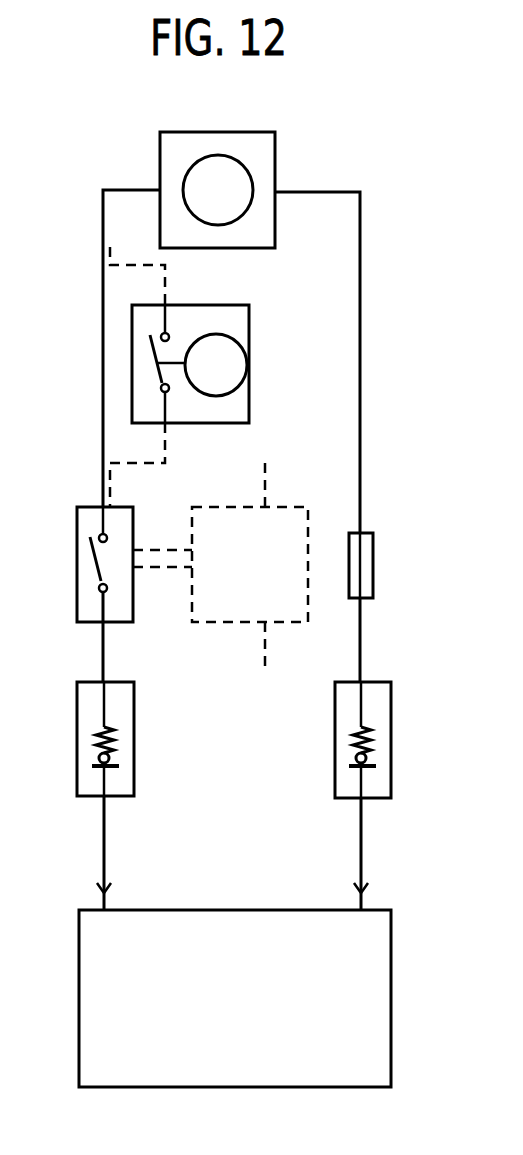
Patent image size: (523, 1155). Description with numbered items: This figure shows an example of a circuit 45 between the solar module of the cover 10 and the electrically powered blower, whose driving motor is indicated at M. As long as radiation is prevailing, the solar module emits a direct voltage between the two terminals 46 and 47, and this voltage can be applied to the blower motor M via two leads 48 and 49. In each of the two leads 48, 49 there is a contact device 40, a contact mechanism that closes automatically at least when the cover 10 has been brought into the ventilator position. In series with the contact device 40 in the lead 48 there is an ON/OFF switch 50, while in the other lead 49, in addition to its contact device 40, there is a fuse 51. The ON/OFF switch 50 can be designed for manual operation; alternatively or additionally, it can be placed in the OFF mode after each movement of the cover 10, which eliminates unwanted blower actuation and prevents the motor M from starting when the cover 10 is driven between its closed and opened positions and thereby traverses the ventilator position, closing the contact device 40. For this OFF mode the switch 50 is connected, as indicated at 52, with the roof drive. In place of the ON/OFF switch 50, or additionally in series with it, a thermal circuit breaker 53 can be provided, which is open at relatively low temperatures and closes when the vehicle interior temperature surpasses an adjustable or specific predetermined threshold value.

The cover 10 is at (252, 1013).
The contact device 40 is at (337, 757).
The circuit 45 is at (392, 340).
The terminal 46 is at (110, 890).
The terminal 47 is at (367, 890).
The lead 48 is at (103, 221).
The lead 49 is at (360, 228).
The ON/OFF switch 50 is at (77, 601).
The fuse 51 is at (372, 582).
The connection to roof drive 52 is at (160, 568).
The thermal circuit breaker 53 is at (240, 325).